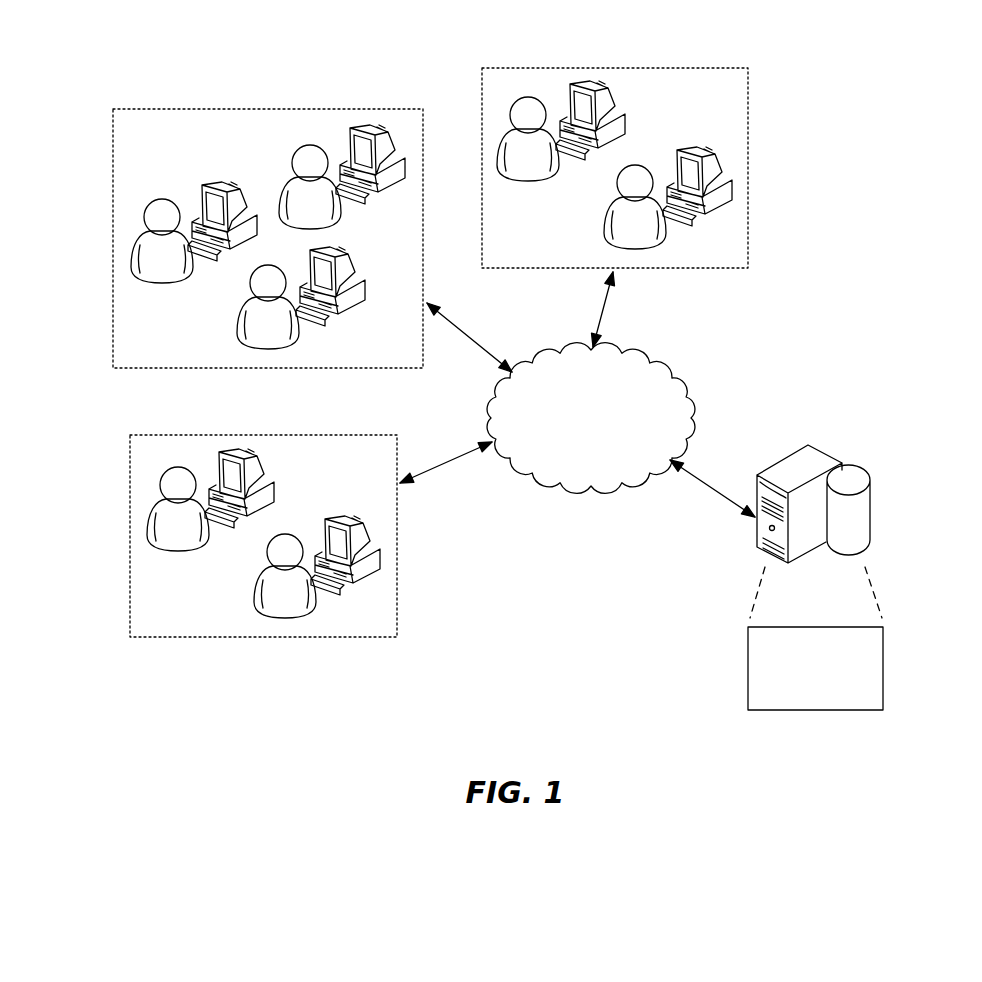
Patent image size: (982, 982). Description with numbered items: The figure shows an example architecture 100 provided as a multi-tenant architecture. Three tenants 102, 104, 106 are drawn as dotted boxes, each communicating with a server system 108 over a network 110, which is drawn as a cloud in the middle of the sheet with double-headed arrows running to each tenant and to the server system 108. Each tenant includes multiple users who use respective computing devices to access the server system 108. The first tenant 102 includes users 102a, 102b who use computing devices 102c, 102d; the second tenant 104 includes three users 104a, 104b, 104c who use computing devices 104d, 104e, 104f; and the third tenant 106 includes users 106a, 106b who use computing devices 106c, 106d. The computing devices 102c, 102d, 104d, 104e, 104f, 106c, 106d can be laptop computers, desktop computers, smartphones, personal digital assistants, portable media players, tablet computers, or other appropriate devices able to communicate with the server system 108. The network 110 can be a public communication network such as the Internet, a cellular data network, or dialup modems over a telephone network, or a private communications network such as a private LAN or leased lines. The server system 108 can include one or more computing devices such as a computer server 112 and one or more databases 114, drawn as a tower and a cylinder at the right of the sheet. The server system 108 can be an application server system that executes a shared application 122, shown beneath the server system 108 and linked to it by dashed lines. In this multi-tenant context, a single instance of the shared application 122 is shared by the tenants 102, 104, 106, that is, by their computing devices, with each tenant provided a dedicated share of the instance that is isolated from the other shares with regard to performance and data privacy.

The example architecture 100 is at (884, 275).
The tenant 102 is at (222, 536).
The user 102a is at (170, 553).
The user 102b is at (258, 606).
The computing device 102c is at (268, 478).
The computing device 102d is at (327, 517).
The tenant 104 is at (241, 225).
The user 104a is at (150, 199).
The user 104b is at (242, 312).
The user 104c is at (311, 146).
The computing device 104d is at (216, 182).
The computing device 104e is at (344, 248).
The computing device 104f is at (382, 128).
The tenant 106 is at (656, 168).
The user 106a is at (519, 186).
The user 106b is at (606, 237).
The computing device 106c is at (617, 105).
The computing device 106d is at (680, 148).
The server system 108 is at (846, 545).
The network 110 is at (682, 390).
The computer server 112 is at (800, 446).
The database 114 is at (870, 511).
The shared application 122 is at (883, 668).